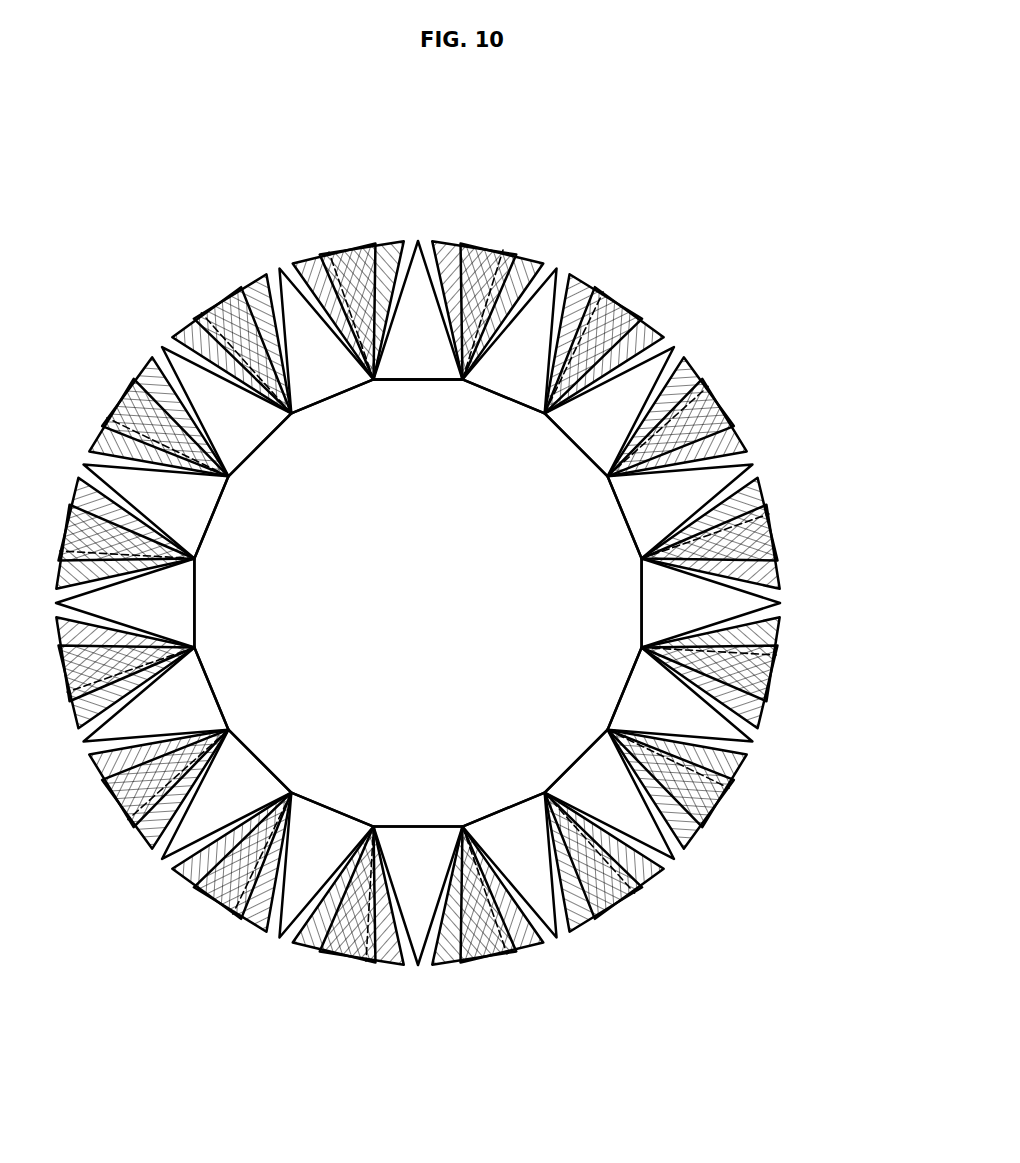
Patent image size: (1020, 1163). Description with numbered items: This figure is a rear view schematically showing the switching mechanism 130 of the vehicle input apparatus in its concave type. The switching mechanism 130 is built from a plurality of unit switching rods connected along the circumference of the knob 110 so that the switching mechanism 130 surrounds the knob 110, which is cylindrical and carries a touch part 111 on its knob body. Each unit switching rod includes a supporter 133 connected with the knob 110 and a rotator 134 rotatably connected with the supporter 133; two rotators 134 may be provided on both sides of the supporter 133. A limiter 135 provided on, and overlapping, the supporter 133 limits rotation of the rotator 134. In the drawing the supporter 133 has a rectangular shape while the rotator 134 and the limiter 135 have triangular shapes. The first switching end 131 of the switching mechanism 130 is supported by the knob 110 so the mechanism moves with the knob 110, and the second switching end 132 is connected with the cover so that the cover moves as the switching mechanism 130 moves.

The switching mechanism 130 is at (417, 540).
The first switching end 131 is at (400, 381).
The second switching end 132 is at (412, 240).
The supporter 133 is at (503, 250).
The rotator 134 is at (452, 237).
The limiter 135 is at (435, 381).
The touch part 111 is at (590, 598).
The knob 110 is at (551, 602).